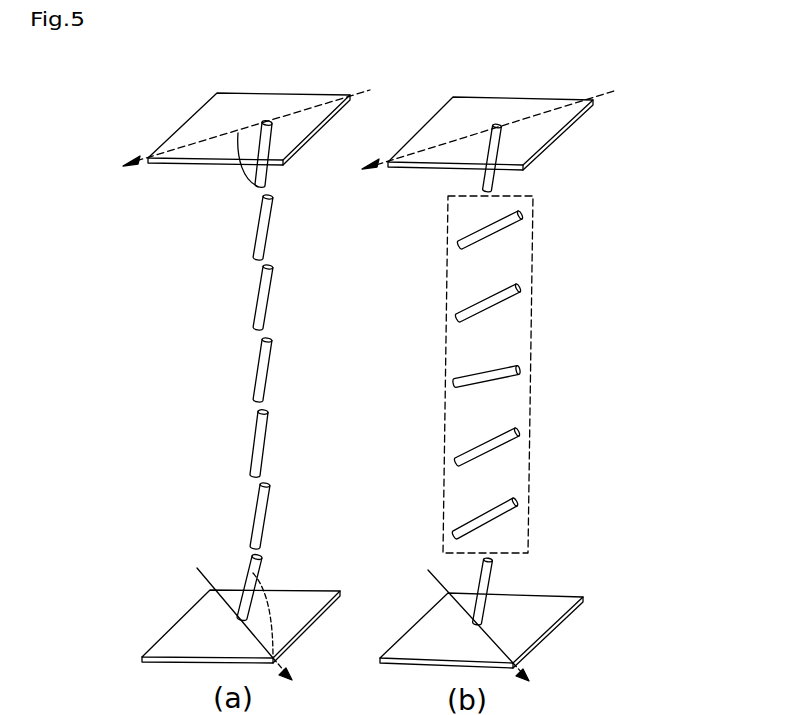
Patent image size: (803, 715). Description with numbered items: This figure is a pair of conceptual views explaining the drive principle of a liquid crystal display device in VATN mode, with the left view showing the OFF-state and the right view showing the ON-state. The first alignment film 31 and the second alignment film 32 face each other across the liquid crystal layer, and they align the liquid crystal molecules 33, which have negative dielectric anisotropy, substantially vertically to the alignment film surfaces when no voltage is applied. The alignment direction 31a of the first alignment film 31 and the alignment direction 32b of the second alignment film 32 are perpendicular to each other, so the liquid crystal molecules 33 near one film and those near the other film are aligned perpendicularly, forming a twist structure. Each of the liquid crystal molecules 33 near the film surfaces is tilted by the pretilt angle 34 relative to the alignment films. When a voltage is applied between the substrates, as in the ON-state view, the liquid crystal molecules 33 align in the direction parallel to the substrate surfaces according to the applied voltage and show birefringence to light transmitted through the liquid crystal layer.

The first alignment film 31 is at (177, 637).
The alignment direction of the first alignment film 31a is at (195, 570).
The second alignment film 32 is at (240, 103).
The alignment direction of the second alignment film 32b is at (193, 140).
The liquid crystal molecules 33 is at (265, 428).
The pretilt angle 34 is at (248, 173).